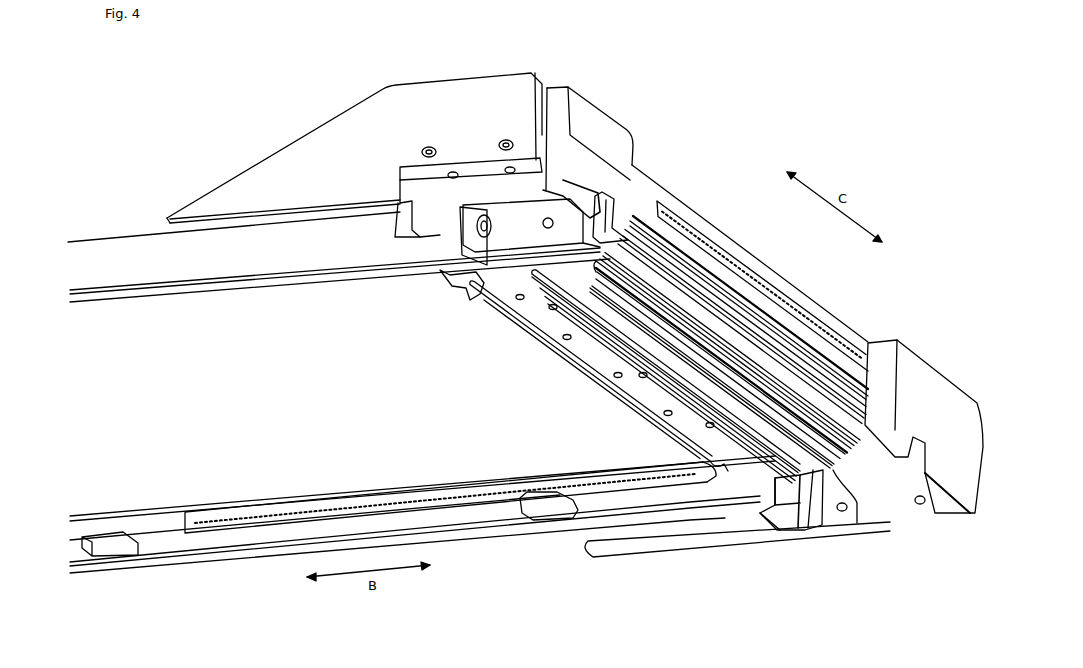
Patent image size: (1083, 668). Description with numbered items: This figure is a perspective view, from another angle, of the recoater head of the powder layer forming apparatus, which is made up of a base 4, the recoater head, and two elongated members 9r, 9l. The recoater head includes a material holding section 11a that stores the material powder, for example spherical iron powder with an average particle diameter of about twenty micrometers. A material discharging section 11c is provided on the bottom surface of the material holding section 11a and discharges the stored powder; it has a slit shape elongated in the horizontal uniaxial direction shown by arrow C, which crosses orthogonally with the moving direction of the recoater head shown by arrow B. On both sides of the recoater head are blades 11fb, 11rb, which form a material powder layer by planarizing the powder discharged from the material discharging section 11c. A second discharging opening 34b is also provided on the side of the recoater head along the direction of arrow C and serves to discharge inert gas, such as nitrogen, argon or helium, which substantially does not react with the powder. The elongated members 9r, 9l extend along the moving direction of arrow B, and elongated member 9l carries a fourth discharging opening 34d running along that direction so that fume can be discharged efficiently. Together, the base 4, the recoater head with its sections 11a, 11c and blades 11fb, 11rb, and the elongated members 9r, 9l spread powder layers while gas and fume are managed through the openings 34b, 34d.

The elongated member 9r is at (127, 260).
The elongated member 9l is at (137, 523).
The base 4 is at (785, 269).
The second discharging opening 34b is at (803, 325).
The fourth discharging opening 34d is at (345, 500).
The blade 11fb is at (482, 298).
The material holding section 11a is at (525, 317).
The material discharging section 11c is at (600, 352).
The blade 11rb is at (830, 460).